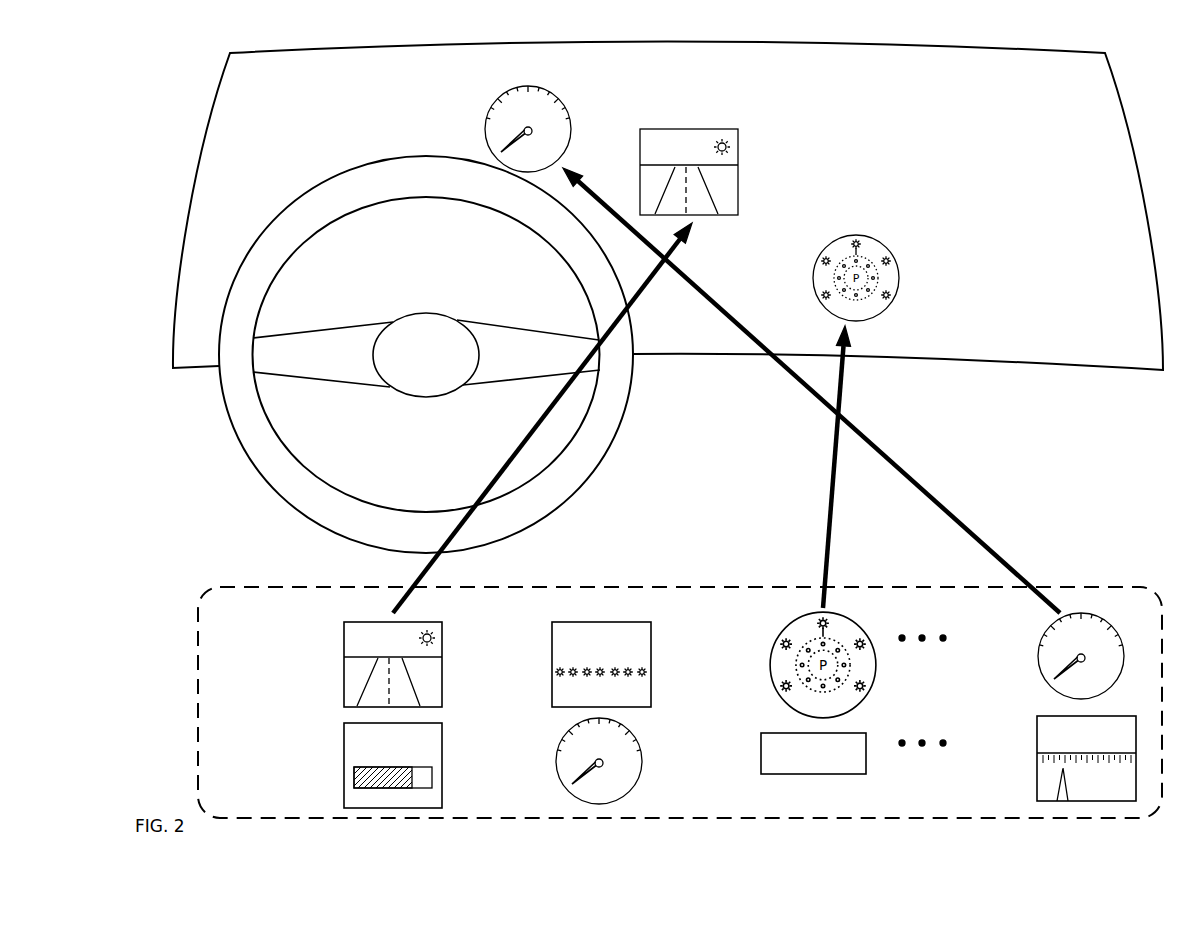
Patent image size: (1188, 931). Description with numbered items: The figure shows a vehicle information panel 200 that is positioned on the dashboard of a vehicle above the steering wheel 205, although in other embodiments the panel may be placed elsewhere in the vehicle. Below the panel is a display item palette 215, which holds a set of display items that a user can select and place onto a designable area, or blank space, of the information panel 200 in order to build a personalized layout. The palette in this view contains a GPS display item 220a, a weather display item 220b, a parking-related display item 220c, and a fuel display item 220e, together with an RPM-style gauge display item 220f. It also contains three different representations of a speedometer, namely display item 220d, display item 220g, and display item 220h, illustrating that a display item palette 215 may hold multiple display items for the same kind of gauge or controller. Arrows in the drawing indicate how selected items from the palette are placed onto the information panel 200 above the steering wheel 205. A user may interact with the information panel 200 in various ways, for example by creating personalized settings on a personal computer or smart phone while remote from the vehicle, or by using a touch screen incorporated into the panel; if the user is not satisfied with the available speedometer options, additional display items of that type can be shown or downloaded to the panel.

The information panel 200 is at (223, 78).
The steering wheel 205 is at (290, 450).
The display item palette 215 is at (217, 587).
The display item 220a is at (345, 646).
The display item 220b is at (552, 646).
The display item 220c is at (762, 647).
The display item 220d is at (1037, 648).
The display item 220e is at (345, 746).
The display item 220f is at (555, 746).
The display item 220g is at (761, 745).
The display item 220h is at (1037, 745).